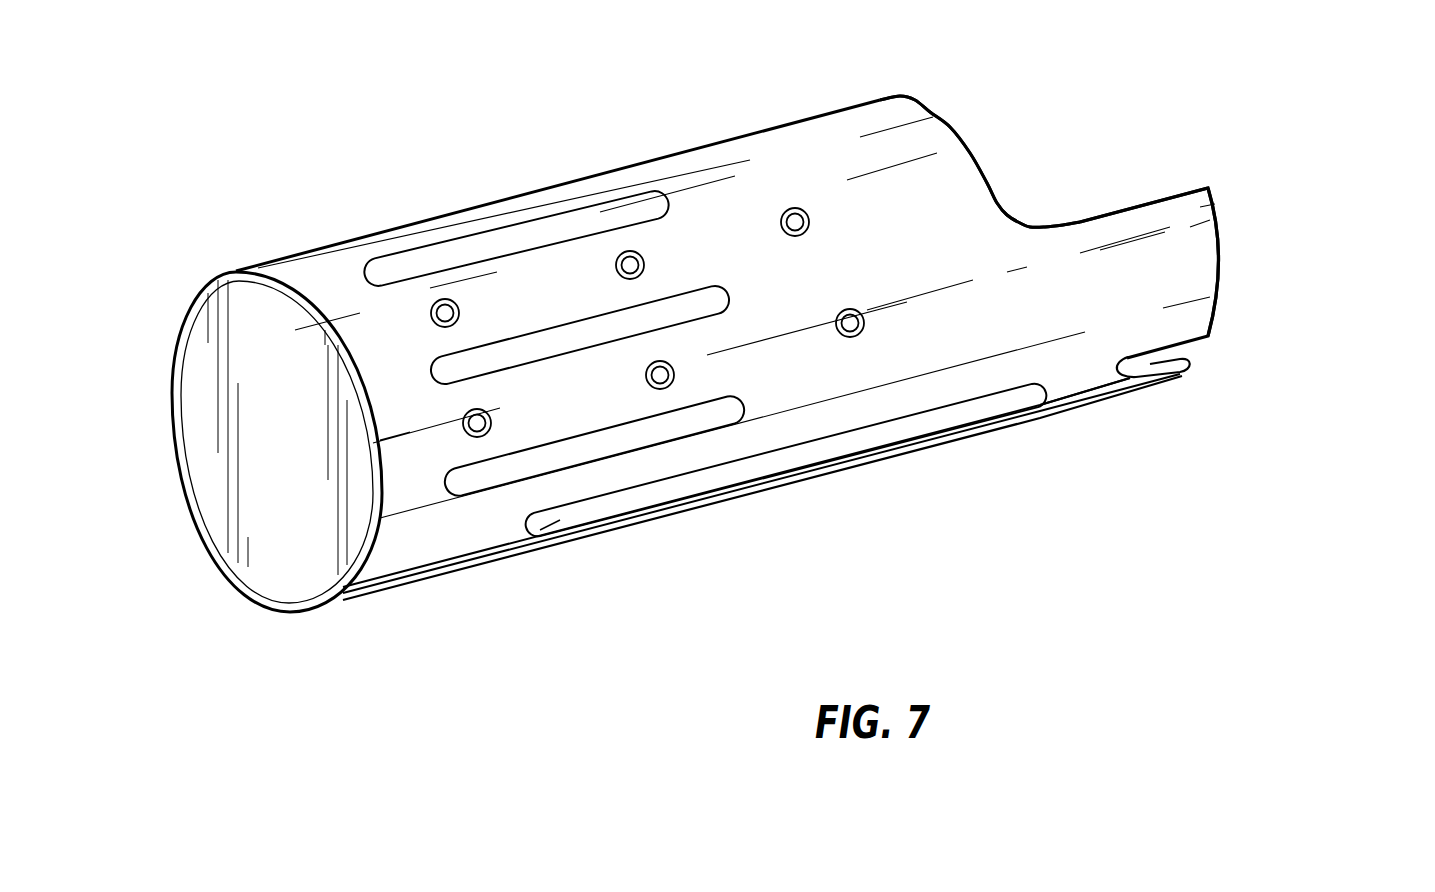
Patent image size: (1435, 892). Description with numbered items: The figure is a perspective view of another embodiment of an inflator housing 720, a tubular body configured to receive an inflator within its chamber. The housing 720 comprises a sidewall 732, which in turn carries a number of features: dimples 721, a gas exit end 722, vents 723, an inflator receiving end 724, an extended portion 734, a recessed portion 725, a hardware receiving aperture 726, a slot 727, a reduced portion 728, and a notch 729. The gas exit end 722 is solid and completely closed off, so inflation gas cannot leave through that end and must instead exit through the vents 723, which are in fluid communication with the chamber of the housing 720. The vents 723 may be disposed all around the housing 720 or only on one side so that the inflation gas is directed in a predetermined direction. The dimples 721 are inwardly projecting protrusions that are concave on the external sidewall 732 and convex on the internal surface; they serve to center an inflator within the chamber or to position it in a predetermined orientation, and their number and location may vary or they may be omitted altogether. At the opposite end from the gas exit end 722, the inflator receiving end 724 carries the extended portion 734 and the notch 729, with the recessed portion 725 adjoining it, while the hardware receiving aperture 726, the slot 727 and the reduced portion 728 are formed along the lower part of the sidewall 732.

The inflator housing 720 is at (530, 152).
The dimples 721 is at (622, 252).
The gas exit end 722 is at (273, 583).
The vents 723 is at (400, 267).
The inflator receiving end 724 is at (1222, 270).
The recessed portion 725 is at (1027, 226).
The hardware receiving aperture 726 is at (690, 480).
The slot 727 is at (1017, 395).
The reduced portion 728 is at (557, 522).
The notch 729 is at (1158, 358).
The sidewall 732 is at (748, 160).
The extended portion 734 is at (1212, 207).